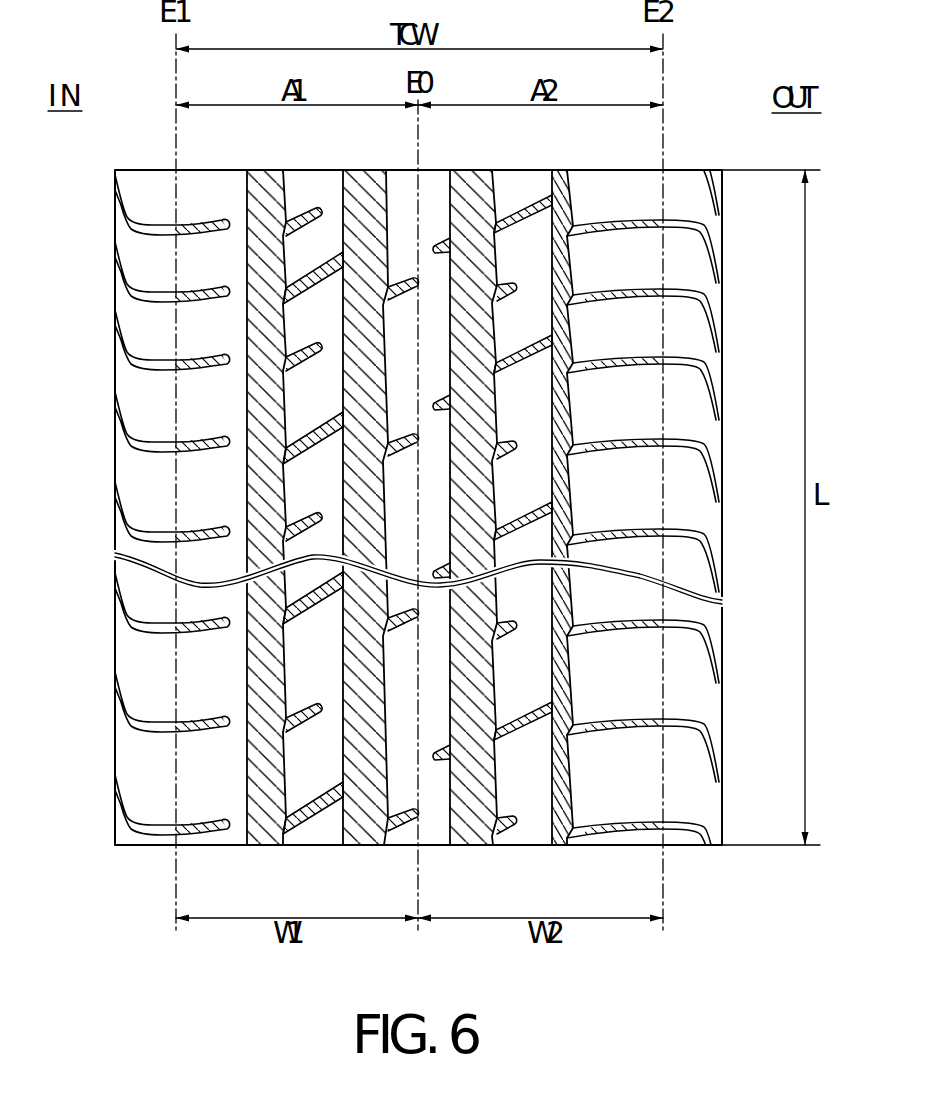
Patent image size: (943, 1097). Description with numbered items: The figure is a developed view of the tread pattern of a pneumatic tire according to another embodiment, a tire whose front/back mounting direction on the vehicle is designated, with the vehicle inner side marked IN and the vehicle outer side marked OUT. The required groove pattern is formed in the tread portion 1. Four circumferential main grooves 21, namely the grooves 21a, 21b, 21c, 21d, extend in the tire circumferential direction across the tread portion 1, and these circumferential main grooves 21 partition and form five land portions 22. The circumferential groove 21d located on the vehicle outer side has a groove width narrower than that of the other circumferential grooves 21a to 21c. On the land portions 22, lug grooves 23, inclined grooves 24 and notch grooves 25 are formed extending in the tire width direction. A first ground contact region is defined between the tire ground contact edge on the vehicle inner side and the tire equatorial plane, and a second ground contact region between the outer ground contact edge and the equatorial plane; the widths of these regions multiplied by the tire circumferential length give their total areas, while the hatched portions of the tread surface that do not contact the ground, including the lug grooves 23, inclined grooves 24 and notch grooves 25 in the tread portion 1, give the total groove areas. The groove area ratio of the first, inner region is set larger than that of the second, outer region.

The tread portion 1 is at (690, 168).
The circumferential main grooves 21 is at (404, 474).
The circumferential main groove 21a is at (270, 183).
The circumferential main groove 21b is at (366, 186).
The circumferential main groove 21c is at (468, 186).
The circumferential groove 21d is at (560, 186).
The land portions 22 is at (203, 187).
The lug grooves 23 is at (138, 838).
The inclined grooves 24 is at (321, 810).
The notch grooves 25 is at (284, 846).